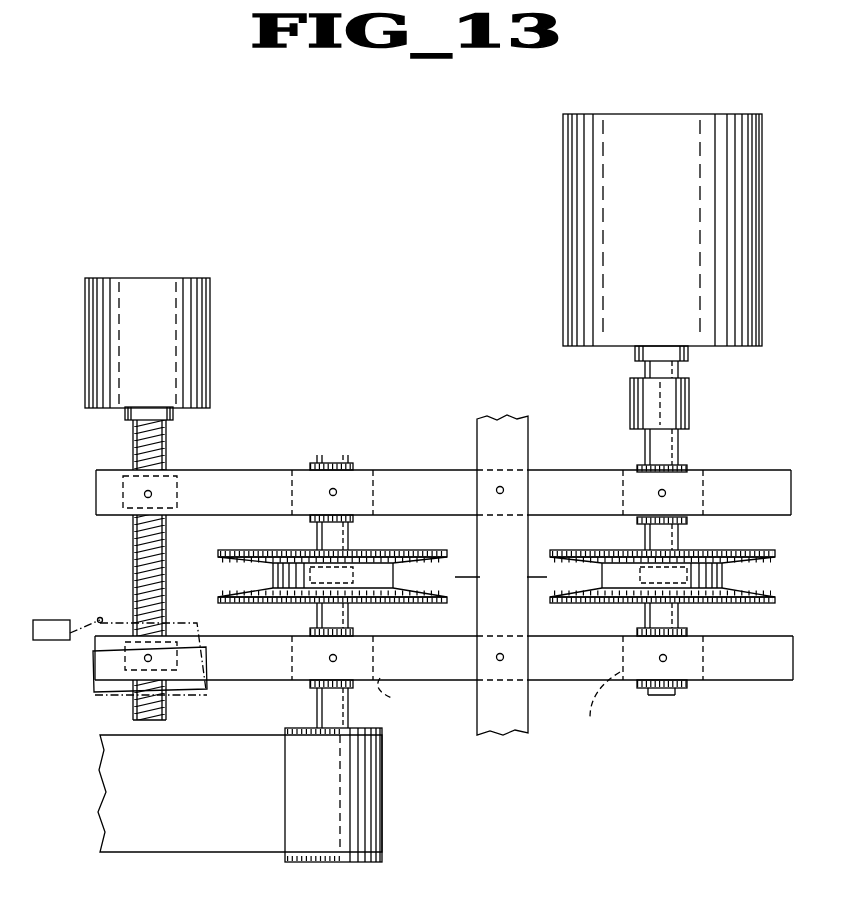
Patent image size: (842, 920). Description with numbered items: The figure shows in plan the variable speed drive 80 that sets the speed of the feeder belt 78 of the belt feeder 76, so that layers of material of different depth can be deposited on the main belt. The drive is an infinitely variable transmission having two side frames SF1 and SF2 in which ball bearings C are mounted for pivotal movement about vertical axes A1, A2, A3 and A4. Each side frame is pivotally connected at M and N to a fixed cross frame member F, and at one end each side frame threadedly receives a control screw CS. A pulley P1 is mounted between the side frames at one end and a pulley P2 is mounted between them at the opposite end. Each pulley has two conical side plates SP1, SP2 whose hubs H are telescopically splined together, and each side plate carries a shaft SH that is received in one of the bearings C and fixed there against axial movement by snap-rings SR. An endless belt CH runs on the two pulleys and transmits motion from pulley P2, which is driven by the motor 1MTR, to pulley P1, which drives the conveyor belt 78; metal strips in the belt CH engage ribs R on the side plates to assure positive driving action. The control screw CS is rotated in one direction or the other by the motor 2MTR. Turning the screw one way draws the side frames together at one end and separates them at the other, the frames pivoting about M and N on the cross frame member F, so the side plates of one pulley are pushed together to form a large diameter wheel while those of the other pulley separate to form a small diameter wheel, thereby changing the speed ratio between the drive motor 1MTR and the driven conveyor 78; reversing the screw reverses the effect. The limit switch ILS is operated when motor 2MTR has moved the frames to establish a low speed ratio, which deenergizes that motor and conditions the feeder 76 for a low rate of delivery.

The variable speed drive 80 is at (359, 368).
The fixed cross frame member F is at (498, 420).
The pivot M is at (496, 490).
The pivot N is at (496, 657).
The vertical axis A1 is at (329, 492).
The vertical axis A2 is at (658, 493).
The vertical axis A3 is at (329, 658).
The vertical axis A4 is at (667, 658).
The ball bearing C is at (380, 477).
The side frame SF1 is at (100, 491).
The side frame SF2 is at (108, 657).
The limit switch ILS is at (48, 620).
The control screw CS is at (138, 534).
The motor 2MTR is at (180, 341).
The motor 1MTR is at (700, 220).
The shaft SH is at (330, 455).
The snap-ring SR is at (311, 466).
The pulley P1 is at (236, 550).
The pulley P2 is at (748, 553).
The conical side plate SP1 is at (380, 550).
The conical side plate SP2 is at (266, 603).
The hub H is at (275, 573).
The rib R is at (369, 586).
The endless belt CH is at (501, 577).
The belt feeder 76 is at (198, 793).
The feeder belt 78 is at (192, 852).